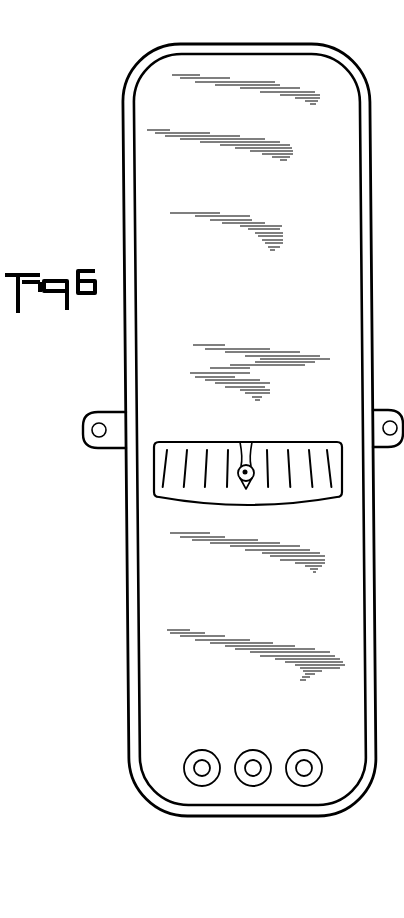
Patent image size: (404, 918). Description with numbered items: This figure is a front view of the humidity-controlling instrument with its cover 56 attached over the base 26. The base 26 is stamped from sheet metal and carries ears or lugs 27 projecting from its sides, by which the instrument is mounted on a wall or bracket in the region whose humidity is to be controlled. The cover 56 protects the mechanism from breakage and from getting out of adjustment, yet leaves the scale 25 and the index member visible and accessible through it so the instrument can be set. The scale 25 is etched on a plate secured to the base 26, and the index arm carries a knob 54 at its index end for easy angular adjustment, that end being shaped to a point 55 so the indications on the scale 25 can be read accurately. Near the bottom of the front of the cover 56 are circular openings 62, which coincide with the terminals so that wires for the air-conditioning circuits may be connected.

The base 26 is at (371, 107).
The cover 56 is at (352, 239).
The ears or lugs 27 is at (385, 411).
The scale 25 is at (295, 462).
The knob 54 is at (239, 482).
The point 55 is at (251, 485).
The circular openings 62 is at (290, 758).